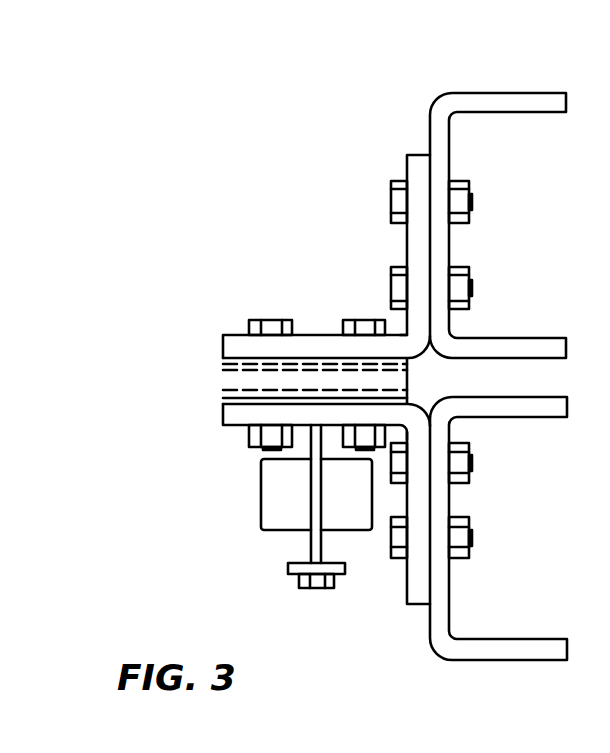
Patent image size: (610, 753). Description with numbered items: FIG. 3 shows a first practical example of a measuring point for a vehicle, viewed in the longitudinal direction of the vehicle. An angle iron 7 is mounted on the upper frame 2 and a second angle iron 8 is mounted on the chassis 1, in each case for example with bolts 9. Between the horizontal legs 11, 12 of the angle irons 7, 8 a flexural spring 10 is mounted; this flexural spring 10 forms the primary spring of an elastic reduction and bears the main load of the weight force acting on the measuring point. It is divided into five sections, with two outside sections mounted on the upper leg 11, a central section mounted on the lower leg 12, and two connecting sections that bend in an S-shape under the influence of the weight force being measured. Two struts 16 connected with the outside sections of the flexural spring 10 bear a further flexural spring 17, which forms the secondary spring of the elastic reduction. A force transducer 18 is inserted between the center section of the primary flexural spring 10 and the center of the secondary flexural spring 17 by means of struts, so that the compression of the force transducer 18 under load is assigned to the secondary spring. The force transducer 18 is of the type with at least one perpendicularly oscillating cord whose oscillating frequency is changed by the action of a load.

The chassis 1 is at (448, 646).
The upper frame 2 is at (443, 110).
The angle iron 7 is at (417, 173).
The angle iron 8 is at (420, 588).
The bolts 9 is at (471, 202).
The flexural spring 10 is at (237, 384).
The upper leg 11 is at (235, 350).
The lower leg 12 is at (240, 418).
The struts 16 is at (314, 538).
The flexural spring 17 is at (293, 566).
The force transducer 18 is at (277, 498).